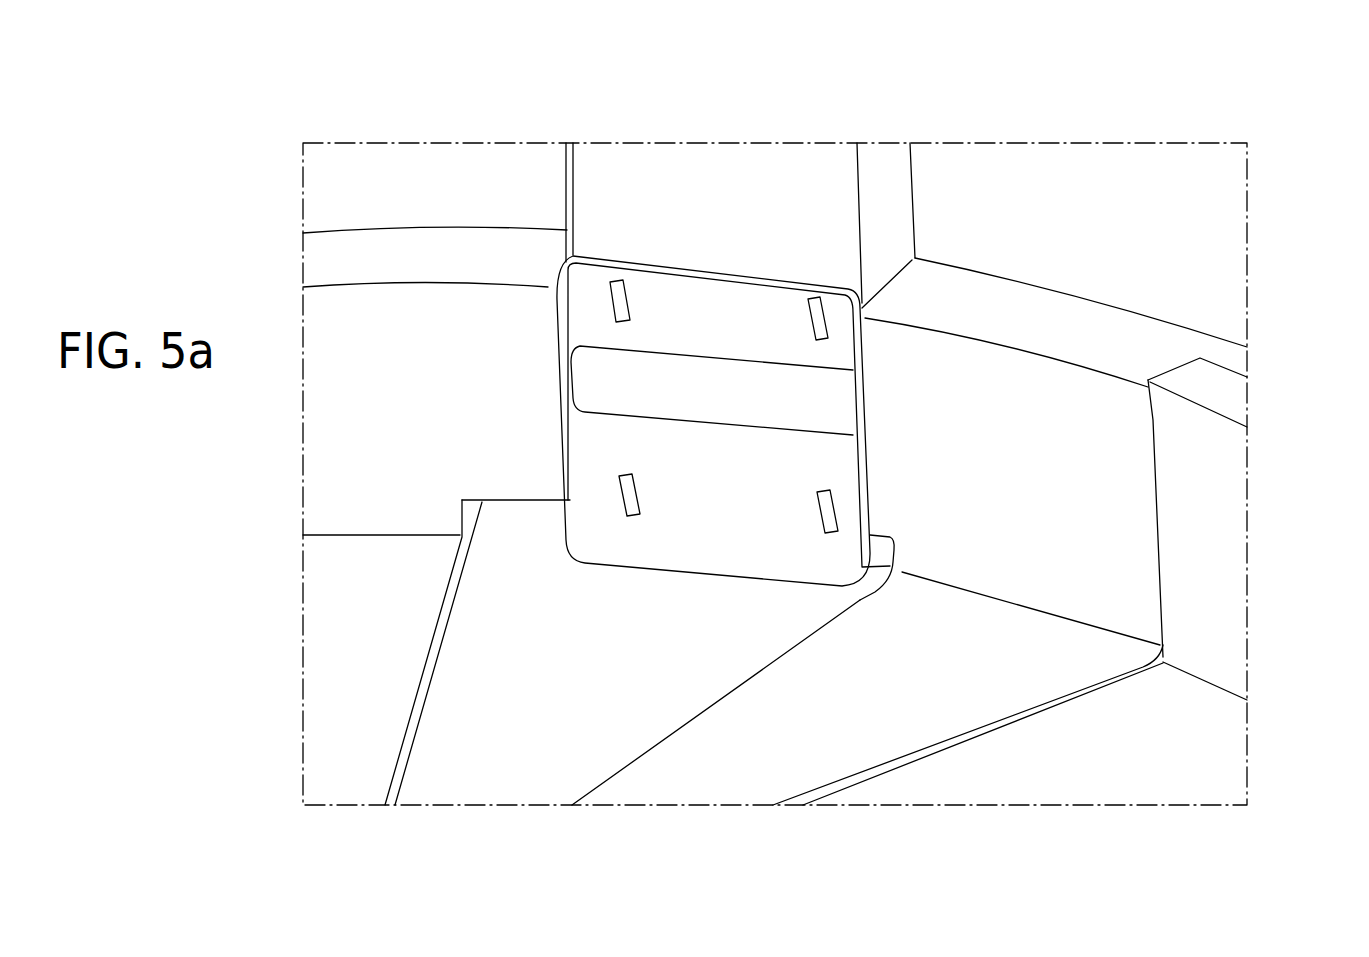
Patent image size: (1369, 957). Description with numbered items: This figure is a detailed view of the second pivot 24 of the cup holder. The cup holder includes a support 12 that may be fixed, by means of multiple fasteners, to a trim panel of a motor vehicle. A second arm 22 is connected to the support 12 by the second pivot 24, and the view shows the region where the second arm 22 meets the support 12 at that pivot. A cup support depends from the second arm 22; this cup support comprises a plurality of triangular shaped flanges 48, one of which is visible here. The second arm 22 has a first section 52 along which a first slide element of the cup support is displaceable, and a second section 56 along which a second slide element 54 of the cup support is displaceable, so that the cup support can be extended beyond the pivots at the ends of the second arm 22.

The support 12 is at (713, 178).
The second arm 22 is at (360, 467).
The second pivot 24 is at (767, 336).
The triangular shaped flange 48 is at (505, 743).
The first section 52 is at (436, 253).
The second slide element 54 is at (1212, 494).
The second section 56 is at (1017, 318).